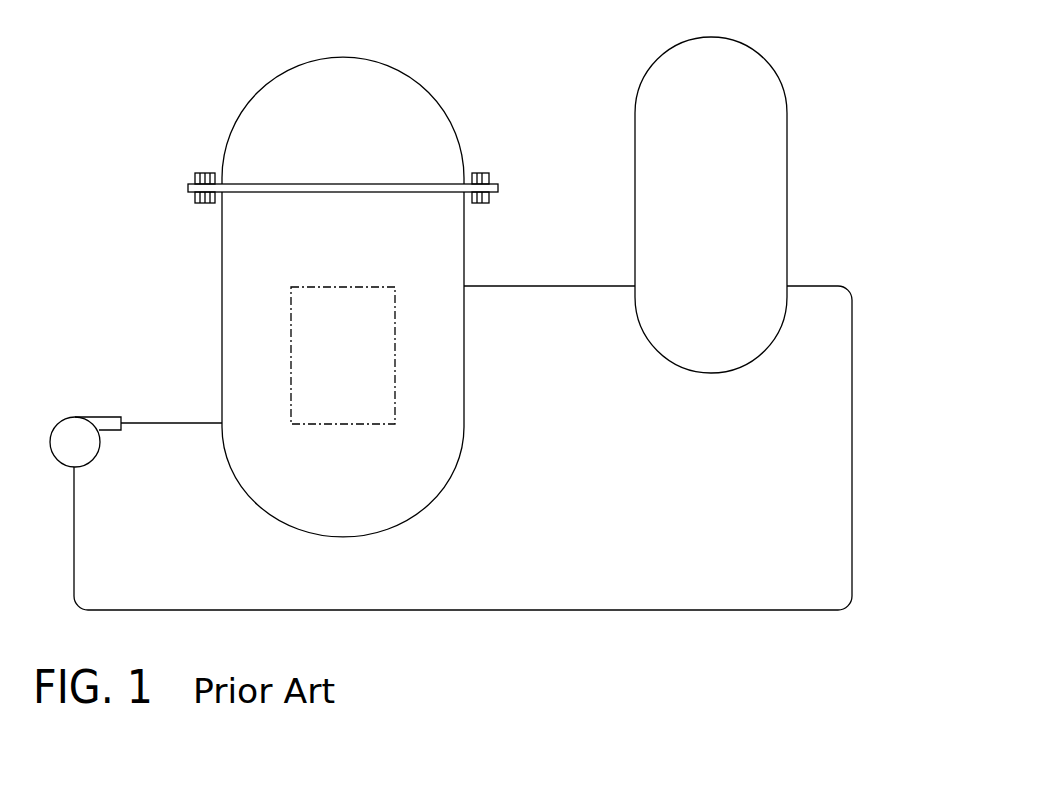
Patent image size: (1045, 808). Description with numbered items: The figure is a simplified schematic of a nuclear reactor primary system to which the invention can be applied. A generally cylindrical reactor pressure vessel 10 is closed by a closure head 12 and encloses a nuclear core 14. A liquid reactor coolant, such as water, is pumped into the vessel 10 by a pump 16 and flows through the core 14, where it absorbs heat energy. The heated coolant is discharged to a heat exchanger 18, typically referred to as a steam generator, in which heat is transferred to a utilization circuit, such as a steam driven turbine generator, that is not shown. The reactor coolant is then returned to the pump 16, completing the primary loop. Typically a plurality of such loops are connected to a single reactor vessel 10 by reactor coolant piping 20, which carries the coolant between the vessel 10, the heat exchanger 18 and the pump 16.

The reactor pressure vessel 10 is at (343, 355).
The closure head 12 is at (236, 129).
The nuclear core 14 is at (291, 342).
The pump 16 is at (72, 417).
The heat exchanger 18 is at (787, 145).
The reactor coolant piping 20 is at (852, 540).